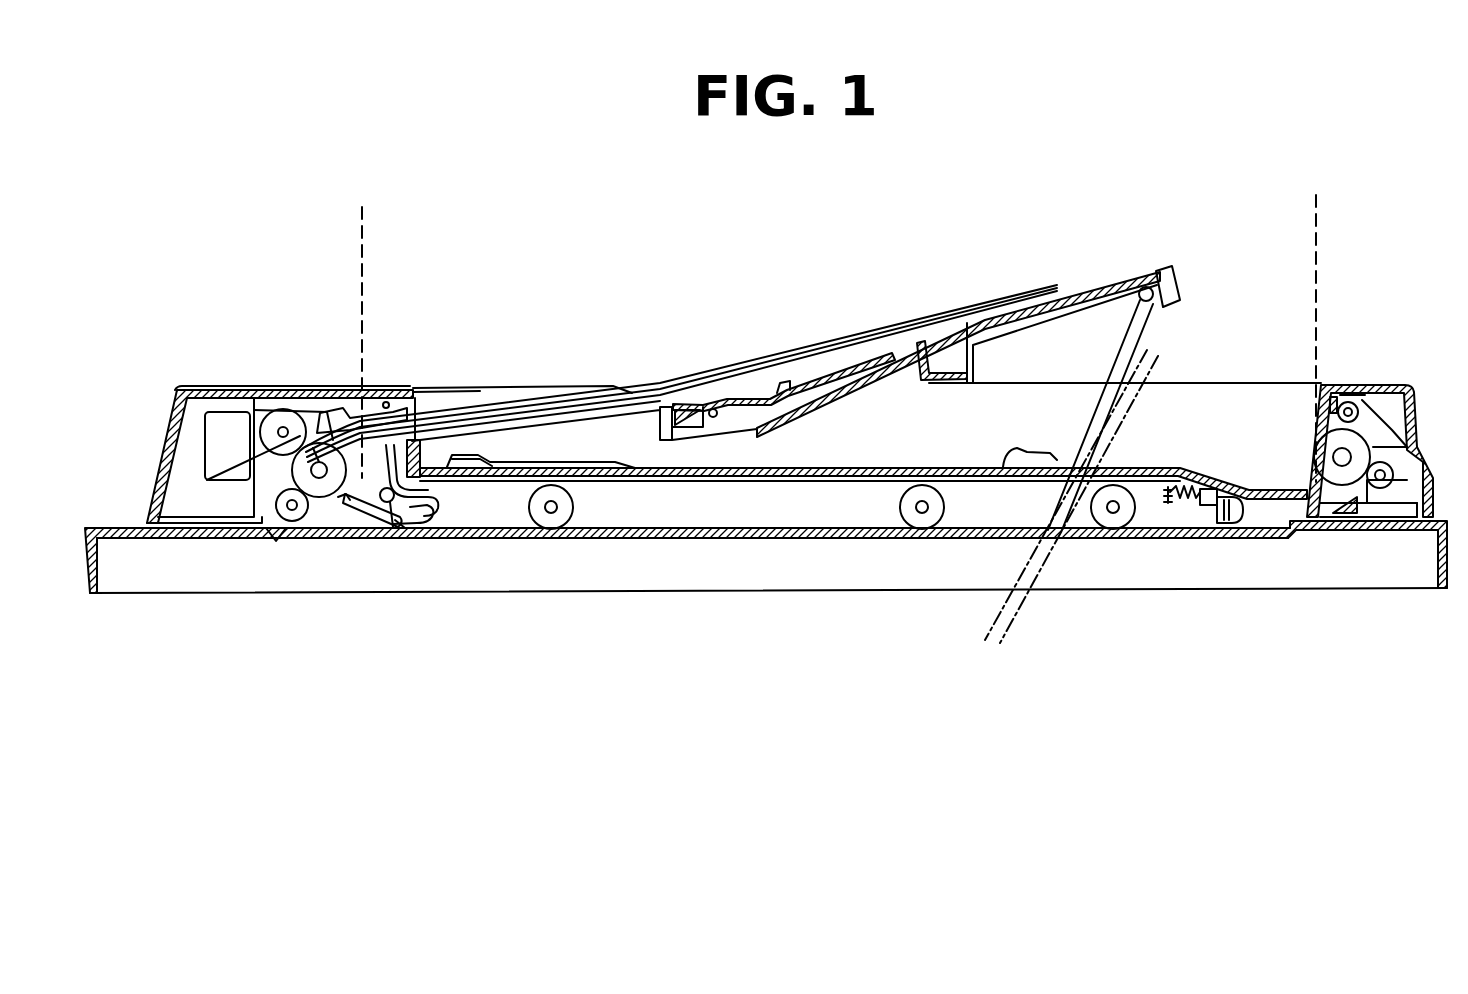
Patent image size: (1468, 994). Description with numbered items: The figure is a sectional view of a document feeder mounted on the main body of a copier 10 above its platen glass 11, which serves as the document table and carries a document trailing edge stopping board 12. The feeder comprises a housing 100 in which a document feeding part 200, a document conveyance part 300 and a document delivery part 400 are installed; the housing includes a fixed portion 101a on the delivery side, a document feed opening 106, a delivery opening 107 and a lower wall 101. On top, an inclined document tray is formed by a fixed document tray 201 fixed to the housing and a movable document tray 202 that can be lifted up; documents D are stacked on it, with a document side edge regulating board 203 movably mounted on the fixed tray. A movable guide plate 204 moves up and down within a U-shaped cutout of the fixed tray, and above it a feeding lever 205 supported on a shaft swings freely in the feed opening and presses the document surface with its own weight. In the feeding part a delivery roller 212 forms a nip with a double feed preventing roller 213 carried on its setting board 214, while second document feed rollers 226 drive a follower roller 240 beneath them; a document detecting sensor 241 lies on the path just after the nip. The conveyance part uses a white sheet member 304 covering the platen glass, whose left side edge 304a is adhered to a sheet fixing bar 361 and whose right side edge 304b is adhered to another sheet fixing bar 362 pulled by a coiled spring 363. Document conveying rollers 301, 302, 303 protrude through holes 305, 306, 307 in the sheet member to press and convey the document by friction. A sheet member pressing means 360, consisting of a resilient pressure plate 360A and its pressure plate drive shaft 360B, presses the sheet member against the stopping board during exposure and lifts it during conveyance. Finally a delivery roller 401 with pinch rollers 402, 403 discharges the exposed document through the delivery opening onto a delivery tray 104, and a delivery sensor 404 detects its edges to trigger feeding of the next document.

The main body of a copier 10 is at (152, 602).
The platen glass 11 is at (528, 545).
The document trailing edge stopping board 12 is at (390, 528).
The housing 100 is at (417, 399).
The housing 101 is at (178, 390).
The fixed portion of the housing 101a is at (1160, 540).
The delivery tray 104 is at (1165, 455).
The document feed opening 106 is at (497, 387).
The delivery opening 107 is at (1305, 400).
The document feeding part 200 is at (357, 239).
The fixed document tray 201 is at (537, 428).
The movable document tray 202 is at (1115, 290).
The document side edge regulating board 203 is at (553, 393).
The movable guide plate 204 is at (436, 503).
The feeding lever 205 is at (368, 398).
The delivery roller 212 is at (322, 500).
The double feed preventing roller 213 is at (283, 408).
The double feed preventing roller setting board 214 is at (205, 452).
The second document feed roller 226 is at (309, 607).
The follower roller 240 is at (278, 540).
The document detecting sensor 241 is at (290, 473).
The document conveyance part 300 is at (1310, 233).
The document conveying roller 301 is at (598, 545).
The document conveying roller 302 is at (913, 532).
The document conveying roller 303 is at (1103, 530).
The white sheet member 304 is at (745, 525).
The left side edge of the sheet member 304a is at (372, 545).
The right side edge of the sheet member 304b is at (1245, 540).
The hole 305 is at (560, 530).
The hole 306 is at (960, 540).
The hole 307 is at (1137, 530).
The sheet member pressing means 360 is at (425, 528).
The pressure plate 360A is at (440, 535).
The pressure plate drive shaft 360B is at (420, 540).
The sheet fixing bar 361 is at (348, 528).
The sheet fixing bar 362 is at (1218, 524).
The coiled spring 363 is at (1182, 508).
The document delivery part 400 is at (1450, 233).
The delivery roller 401 is at (1345, 490).
The pinch roller 402 is at (1385, 503).
The pinch roller 403 is at (1355, 402).
The delivery sensor 404 is at (1385, 462).
The document D is at (847, 350).